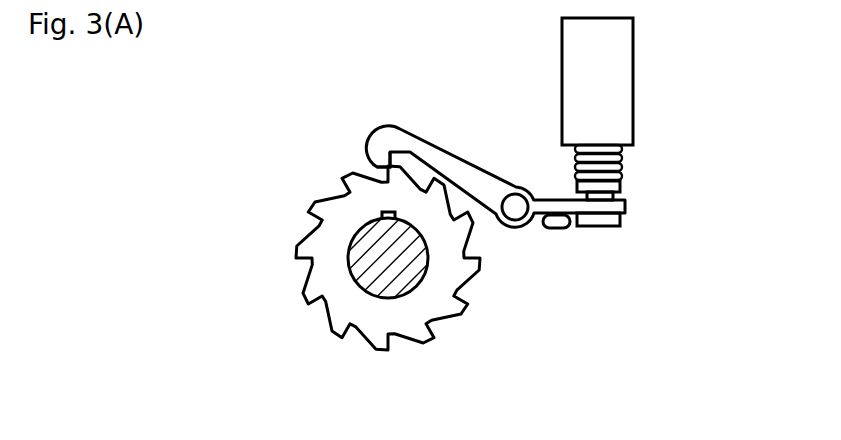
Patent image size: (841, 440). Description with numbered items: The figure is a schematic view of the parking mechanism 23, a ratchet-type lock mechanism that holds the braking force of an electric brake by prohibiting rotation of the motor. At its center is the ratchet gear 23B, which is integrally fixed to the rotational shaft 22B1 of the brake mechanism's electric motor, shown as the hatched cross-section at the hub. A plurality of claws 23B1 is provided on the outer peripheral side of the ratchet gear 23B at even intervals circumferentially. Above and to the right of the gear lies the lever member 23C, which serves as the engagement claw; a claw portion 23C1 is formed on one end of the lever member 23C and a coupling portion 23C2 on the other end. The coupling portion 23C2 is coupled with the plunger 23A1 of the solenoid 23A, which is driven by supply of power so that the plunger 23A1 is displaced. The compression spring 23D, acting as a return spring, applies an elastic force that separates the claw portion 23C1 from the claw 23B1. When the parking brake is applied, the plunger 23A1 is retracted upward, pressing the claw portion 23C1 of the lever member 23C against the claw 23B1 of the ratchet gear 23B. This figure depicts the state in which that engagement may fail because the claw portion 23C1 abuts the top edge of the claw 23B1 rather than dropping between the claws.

The parking mechanism 23 is at (335, 154).
The solenoid 23A is at (652, 122).
The plunger 23A1 is at (603, 197).
The ratchet gear 23B is at (373, 235).
The claw 23B1 is at (310, 206).
The lever member 23C is at (554, 159).
The claw portion 23C1 is at (385, 157).
The coupling portion 23C2 is at (615, 207).
The compression spring 23D is at (615, 168).
The rotational shaft 22B1 is at (386, 256).